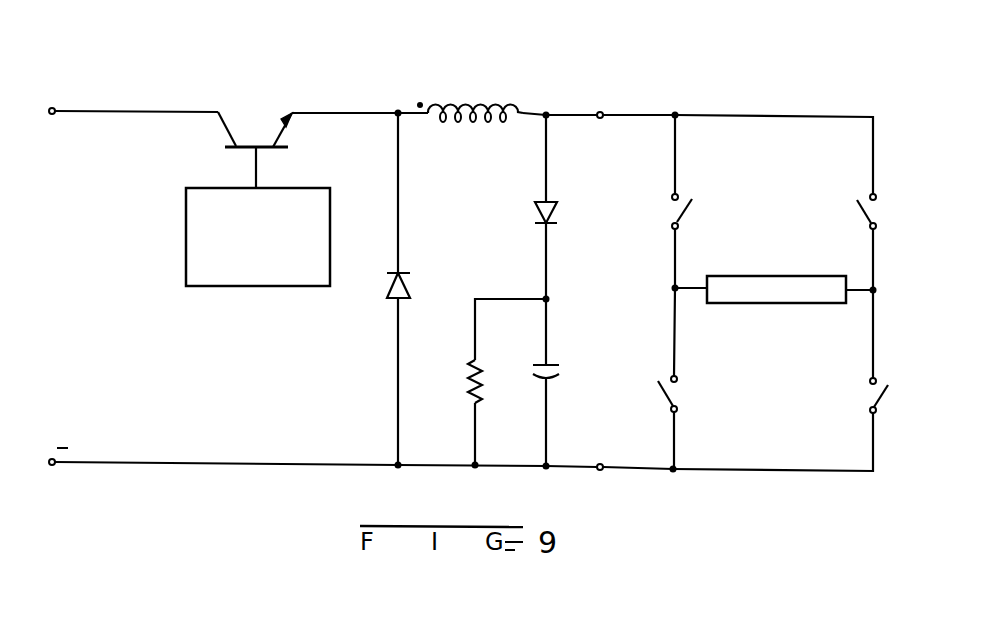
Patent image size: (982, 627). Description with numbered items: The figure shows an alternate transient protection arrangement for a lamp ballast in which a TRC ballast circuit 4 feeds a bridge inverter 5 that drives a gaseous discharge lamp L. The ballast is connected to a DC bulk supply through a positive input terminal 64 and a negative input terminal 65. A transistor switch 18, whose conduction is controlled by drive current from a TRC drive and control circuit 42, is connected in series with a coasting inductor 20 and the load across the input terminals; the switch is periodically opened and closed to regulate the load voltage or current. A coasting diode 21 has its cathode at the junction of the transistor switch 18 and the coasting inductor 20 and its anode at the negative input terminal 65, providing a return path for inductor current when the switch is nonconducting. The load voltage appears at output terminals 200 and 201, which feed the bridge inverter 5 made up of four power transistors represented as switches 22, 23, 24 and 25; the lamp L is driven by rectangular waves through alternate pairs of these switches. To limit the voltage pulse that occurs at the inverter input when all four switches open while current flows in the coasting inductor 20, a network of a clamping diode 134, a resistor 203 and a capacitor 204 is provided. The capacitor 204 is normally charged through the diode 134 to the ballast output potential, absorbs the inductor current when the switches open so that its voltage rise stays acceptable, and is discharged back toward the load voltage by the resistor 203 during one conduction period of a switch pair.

The positive input terminal 64 is at (50, 108).
The negative input terminal 65 is at (49, 459).
The transistor switch 18 is at (226, 141).
The TRC drive and control circuit 42 is at (258, 237).
The coasting inductor 20 is at (478, 104).
The TRC ballast circuit 4 is at (434, 173).
The bridge inverter 5 is at (773, 174).
The clamping diode 134 is at (533, 213).
The coasting diode 21 is at (408, 279).
The output terminal 200 is at (602, 111).
The output terminal 201 is at (600, 463).
The resistor 203 is at (467, 388).
The capacitor 204 is at (560, 370).
The transistor switch 22 is at (672, 208).
The transistor switch 23 is at (677, 388).
The transistor switch 24 is at (877, 208).
The transistor switch 25 is at (880, 388).
The gaseous discharge lamp L is at (753, 276).